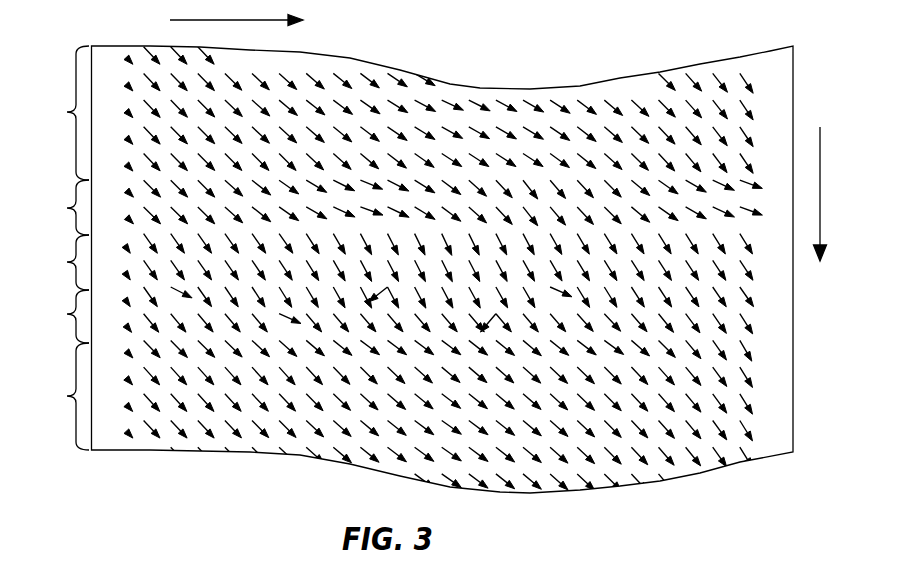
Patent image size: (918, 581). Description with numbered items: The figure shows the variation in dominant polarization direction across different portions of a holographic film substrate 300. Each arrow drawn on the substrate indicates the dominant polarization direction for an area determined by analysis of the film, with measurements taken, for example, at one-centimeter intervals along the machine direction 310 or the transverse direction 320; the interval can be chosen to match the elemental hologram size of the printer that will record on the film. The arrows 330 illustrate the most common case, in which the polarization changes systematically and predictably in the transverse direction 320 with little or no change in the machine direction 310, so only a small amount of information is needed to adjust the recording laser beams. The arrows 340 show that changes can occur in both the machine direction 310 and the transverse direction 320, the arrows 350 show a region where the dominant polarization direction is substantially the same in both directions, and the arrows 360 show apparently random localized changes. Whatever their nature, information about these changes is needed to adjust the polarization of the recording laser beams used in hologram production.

The holographic film substrate 300 is at (677, 478).
The machine direction 310 is at (820, 178).
The transverse direction 320 is at (212, 20).
The arrows 330 is at (392, 269).
The arrows 340 is at (396, 207).
The arrows 350 is at (392, 262).
The arrows 360 is at (392, 315).